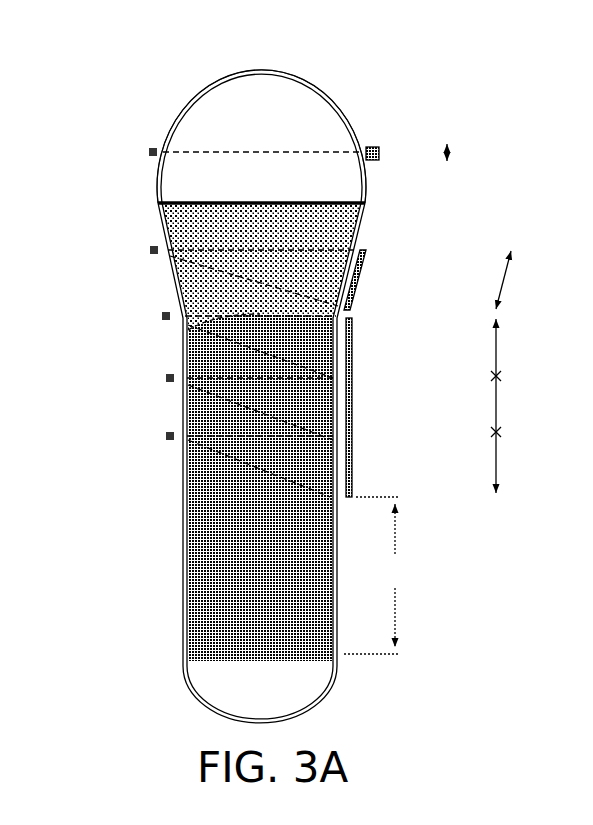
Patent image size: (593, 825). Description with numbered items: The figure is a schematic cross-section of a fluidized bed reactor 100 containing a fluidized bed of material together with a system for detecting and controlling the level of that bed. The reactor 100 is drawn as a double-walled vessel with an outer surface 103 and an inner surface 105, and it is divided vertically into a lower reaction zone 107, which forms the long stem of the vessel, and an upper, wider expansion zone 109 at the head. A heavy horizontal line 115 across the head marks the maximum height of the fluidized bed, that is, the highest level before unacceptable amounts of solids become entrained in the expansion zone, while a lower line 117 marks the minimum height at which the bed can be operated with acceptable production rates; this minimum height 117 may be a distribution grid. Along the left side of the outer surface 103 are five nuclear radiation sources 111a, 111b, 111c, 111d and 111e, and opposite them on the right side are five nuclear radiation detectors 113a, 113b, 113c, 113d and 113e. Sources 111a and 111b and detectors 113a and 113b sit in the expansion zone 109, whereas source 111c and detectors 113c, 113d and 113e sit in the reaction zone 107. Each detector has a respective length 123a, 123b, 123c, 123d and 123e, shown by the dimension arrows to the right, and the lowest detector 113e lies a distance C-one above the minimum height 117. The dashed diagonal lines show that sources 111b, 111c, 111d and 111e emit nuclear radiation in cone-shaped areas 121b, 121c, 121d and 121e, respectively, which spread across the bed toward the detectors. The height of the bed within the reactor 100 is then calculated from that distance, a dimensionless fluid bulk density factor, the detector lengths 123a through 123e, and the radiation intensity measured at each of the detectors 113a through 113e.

The fluidized bed reactor 100 is at (336, 43).
The outer surface 103 is at (167, 134).
The inner surface 105 is at (193, 100).
The reaction zone 107 is at (130, 551).
The expansion zone 109 is at (112, 285).
The nuclear radiation source 111a is at (148, 152).
The nuclear radiation source 111b is at (150, 250).
The nuclear radiation source 111c is at (162, 316).
The nuclear radiation source 111d is at (166, 378).
The nuclear radiation source 111e is at (166, 436).
The nuclear radiation detector 113a is at (380, 148).
The nuclear radiation detector 113b is at (364, 275).
The nuclear radiation detector 113c is at (352, 347).
The nuclear radiation detector 113d is at (352, 411).
The nuclear radiation detector 113e is at (352, 467).
The maximum height line 115 is at (266, 200).
The minimum height line 117 is at (270, 660).
The cone-shaped area 121b is at (254, 281).
The cone-shaped area 121c is at (260, 350).
The cone-shaped area 121d is at (260, 411).
The cone-shaped area 121e is at (259, 468).
The detector length 123a is at (481, 152).
The detector length 123b is at (527, 280).
The detector length 123c is at (523, 350).
The detector length 123d is at (525, 406).
The detector length 123e is at (527, 462).